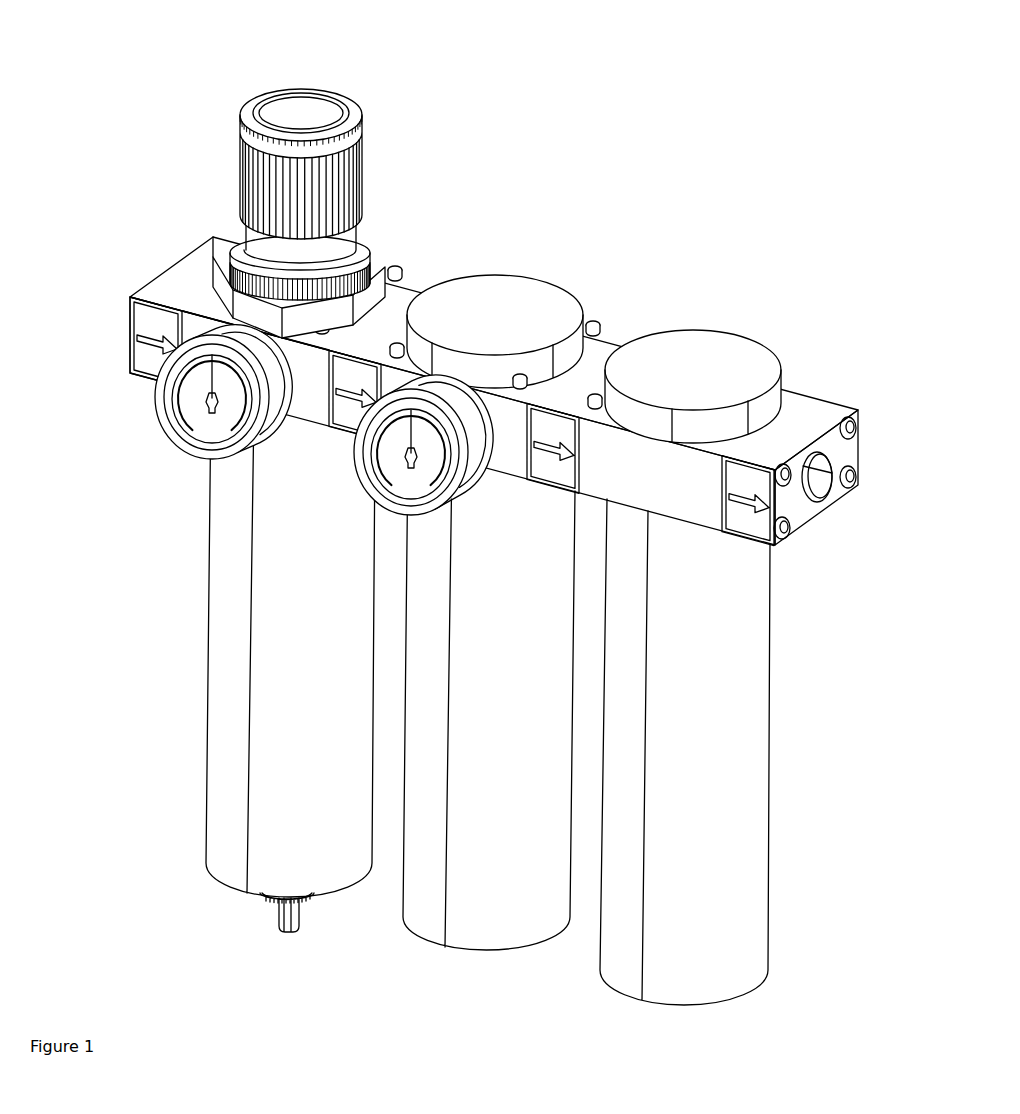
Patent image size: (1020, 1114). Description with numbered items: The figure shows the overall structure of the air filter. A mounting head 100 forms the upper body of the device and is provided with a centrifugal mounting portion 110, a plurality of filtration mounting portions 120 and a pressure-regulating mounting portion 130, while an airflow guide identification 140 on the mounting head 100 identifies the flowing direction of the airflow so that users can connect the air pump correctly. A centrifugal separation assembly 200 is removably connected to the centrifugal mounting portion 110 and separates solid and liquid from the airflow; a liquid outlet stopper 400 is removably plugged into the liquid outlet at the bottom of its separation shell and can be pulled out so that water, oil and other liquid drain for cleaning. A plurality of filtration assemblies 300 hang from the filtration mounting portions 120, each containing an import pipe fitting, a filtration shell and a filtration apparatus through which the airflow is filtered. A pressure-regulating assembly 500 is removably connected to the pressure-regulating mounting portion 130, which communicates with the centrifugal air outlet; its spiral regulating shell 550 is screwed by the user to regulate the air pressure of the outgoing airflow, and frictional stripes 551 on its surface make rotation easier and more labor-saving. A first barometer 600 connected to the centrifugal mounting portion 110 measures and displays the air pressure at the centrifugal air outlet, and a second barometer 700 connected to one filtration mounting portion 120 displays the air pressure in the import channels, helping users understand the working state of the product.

The mounting head 100 is at (832, 392).
The centrifugal mounting portion 110 is at (303, 372).
The filtration mounting portion 120 is at (685, 343).
The pressure-regulating mounting portion 130 is at (223, 290).
The airflow guide identification 140 is at (786, 532).
The centrifugal separation assembly 200 is at (277, 652).
The filtration assembly 300 is at (710, 812).
The liquid outlet stopper 400 is at (290, 908).
The pressure-regulating assembly 500 is at (317, 163).
The spiral regulating shell 550 is at (291, 105).
The frictional stripes 551 is at (252, 152).
The first barometer 600 is at (178, 348).
The second barometer 700 is at (458, 417).